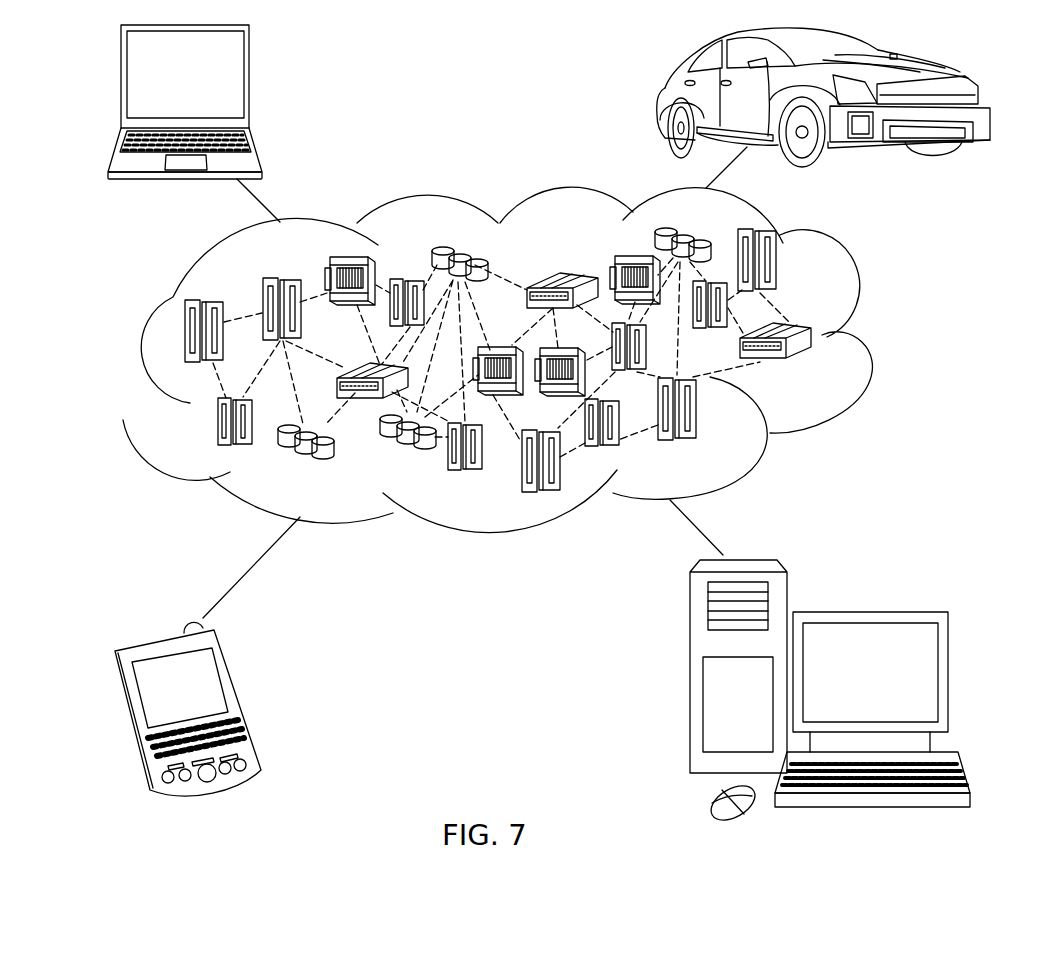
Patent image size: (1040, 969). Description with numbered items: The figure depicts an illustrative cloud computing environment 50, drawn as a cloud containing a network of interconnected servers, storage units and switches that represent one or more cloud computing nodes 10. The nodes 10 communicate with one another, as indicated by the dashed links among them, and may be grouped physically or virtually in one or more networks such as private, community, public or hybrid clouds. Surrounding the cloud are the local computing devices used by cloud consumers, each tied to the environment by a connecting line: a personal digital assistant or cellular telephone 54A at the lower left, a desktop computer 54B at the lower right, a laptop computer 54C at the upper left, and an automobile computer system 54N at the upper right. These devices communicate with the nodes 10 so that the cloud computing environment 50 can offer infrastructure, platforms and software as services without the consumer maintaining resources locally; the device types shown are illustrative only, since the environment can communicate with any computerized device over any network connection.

The cloud computing node 10 is at (813, 368).
The cloud computing environment 50 is at (868, 338).
The personal digital assistant or cellular telephone 54A is at (240, 698).
The desktop computer 54B is at (868, 612).
The laptop computer 54C is at (249, 82).
The automobile computer system 54N is at (661, 100).